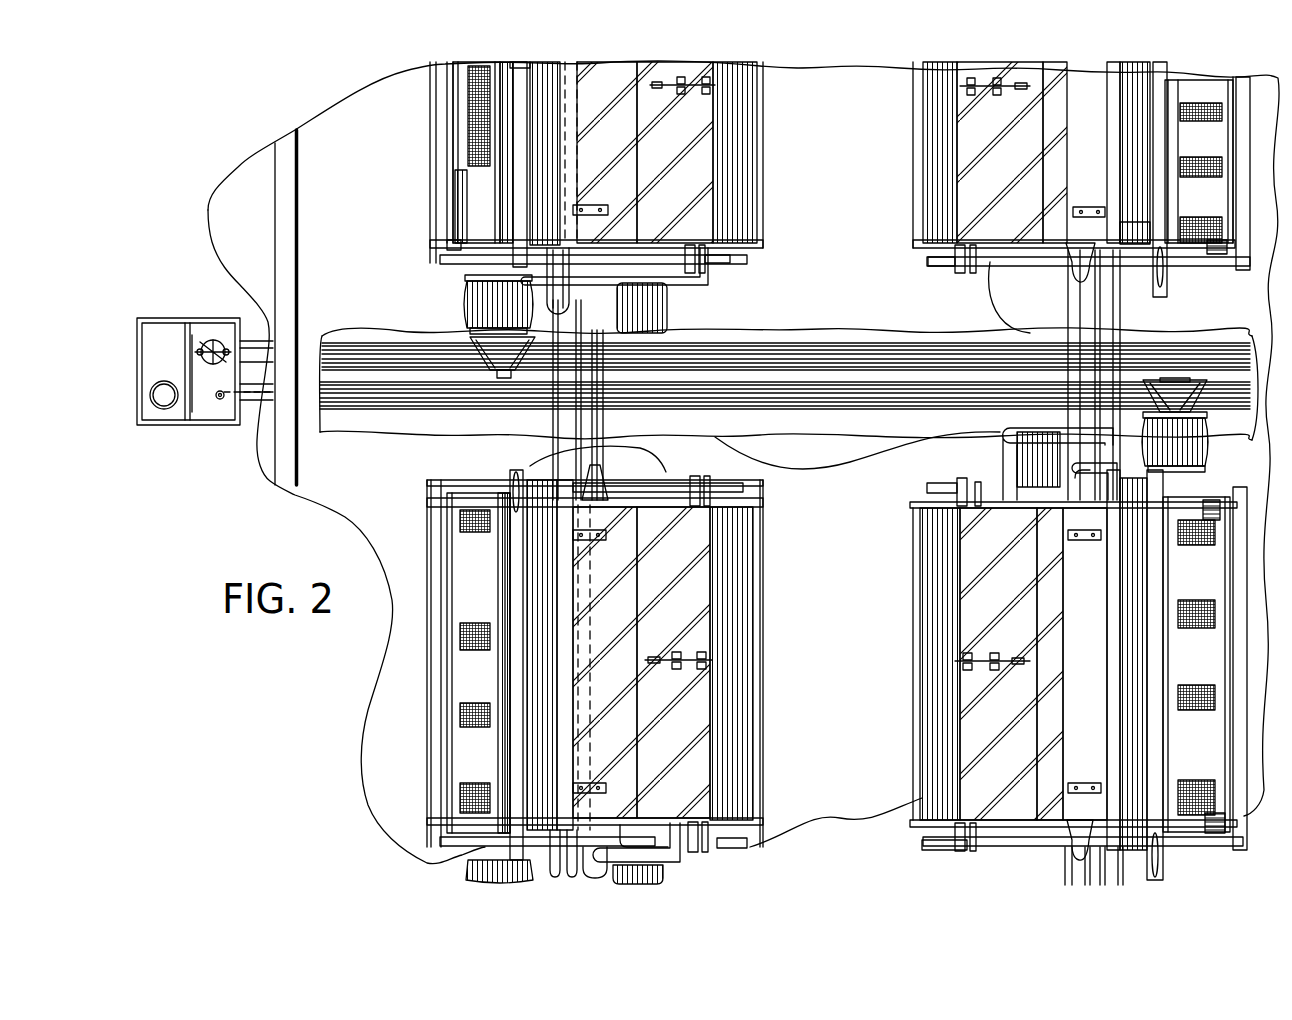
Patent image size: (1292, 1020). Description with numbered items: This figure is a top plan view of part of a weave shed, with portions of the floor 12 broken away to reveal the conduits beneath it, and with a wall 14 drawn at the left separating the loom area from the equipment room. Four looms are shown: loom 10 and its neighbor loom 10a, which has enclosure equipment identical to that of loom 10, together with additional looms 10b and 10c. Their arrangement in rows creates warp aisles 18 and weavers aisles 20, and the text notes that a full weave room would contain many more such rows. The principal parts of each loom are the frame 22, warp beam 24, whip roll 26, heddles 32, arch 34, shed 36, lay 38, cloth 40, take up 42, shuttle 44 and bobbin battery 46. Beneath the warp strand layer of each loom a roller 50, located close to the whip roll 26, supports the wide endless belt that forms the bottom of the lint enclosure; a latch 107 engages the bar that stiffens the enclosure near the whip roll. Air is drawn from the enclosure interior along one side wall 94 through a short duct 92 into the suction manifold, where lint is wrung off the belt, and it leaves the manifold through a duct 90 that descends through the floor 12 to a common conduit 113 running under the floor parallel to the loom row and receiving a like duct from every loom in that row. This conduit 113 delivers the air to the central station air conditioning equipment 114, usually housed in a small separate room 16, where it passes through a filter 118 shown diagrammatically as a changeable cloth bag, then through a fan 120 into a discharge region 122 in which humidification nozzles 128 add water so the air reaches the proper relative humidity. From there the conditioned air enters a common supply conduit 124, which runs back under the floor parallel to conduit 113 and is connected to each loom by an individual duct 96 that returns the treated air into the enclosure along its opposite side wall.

The loom 10 is at (912, 698).
The loom 10a is at (760, 697).
The loom 10b is at (905, 240).
The loom 10c is at (840, 211).
The floor 12 is at (848, 478).
The wall 14 is at (284, 203).
The separate room 16 is at (150, 220).
The warp aisles 18 is at (852, 178).
The weavers aisles 20 is at (383, 236).
The frame 22 is at (938, 850).
The warp beam 24 is at (732, 141).
The whip roll 26 is at (447, 248).
The heddles 32 is at (1145, 680).
The arch 34 is at (567, 181).
The shed 36 is at (1168, 590).
The lay 38 is at (1157, 692).
The cloth 40 is at (1208, 644).
The take up 42 is at (1228, 270).
The shuttle 44 is at (1157, 856).
The bobbin battery 46 is at (1210, 440).
The roller 50 is at (694, 268).
The duct 90 is at (563, 860).
The short duct 92 is at (1080, 265).
The side wall 94 is at (622, 500).
The duct 96 is at (1010, 468).
The latch 107 is at (690, 80).
The common conduit 113 is at (790, 385).
The central station air conditioning equipment 114 is at (152, 305).
The filter 118 is at (152, 394).
The fan 120 is at (213, 342).
The discharge region 122 is at (208, 375).
The common supply conduit 124 is at (808, 350).
The humidification nozzles 128 is at (221, 400).